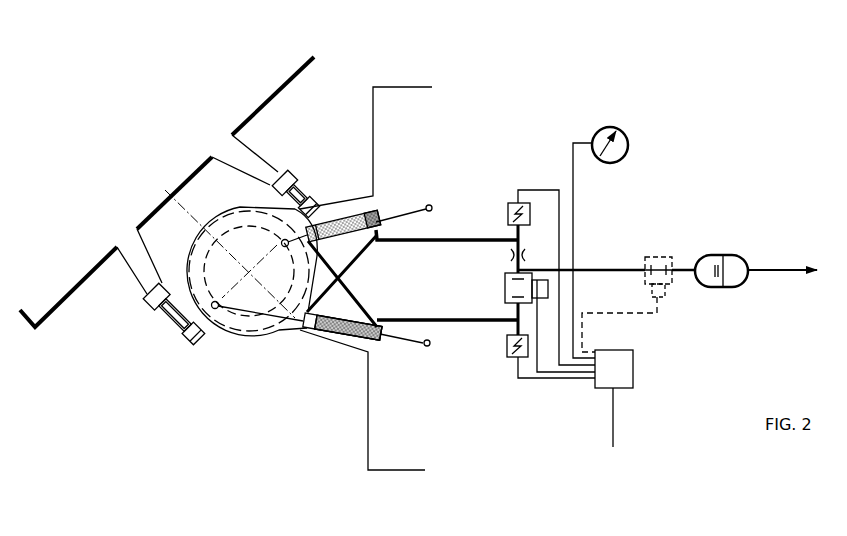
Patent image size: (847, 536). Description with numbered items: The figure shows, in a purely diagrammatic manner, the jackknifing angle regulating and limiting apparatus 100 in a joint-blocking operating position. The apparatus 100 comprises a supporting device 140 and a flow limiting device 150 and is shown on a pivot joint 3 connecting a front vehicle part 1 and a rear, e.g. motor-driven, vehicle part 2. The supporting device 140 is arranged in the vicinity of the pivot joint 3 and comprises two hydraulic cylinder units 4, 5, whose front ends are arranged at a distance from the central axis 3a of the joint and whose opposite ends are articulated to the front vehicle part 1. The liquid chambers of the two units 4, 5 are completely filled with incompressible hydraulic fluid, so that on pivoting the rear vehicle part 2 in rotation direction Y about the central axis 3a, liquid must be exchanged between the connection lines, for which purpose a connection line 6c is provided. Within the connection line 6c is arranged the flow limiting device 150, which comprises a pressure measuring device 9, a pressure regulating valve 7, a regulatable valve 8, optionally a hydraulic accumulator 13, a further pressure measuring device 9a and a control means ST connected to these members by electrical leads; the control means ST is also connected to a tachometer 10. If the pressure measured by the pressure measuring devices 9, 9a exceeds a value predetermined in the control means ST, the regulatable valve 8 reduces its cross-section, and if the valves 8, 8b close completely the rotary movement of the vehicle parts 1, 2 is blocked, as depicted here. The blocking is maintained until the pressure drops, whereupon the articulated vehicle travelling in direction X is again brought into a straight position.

The front vehicle part 1 is at (412, 97).
The rear vehicle part 2 is at (287, 27).
The pivot joint 3 is at (245, 243).
The central axis of the joint 3a is at (248, 272).
The hydraulic cylinder unit 4 is at (342, 222).
The hydraulic cylinder unit 5 is at (325, 339).
The connection line 6c is at (467, 240).
The pressure regulating valve 7 is at (527, 252).
The regulatable valve 8 is at (551, 291).
The valve 8b is at (667, 300).
The pressure measuring device 9 is at (516, 203).
The further pressure measuring device 9a is at (508, 359).
The tachometer 10 is at (630, 152).
The hydraulic accumulator 13 is at (737, 256).
The jackknifing angle regulating and limiting apparatus 100 is at (668, 117).
The supporting device 140 is at (228, 432).
The flow limiting device 150 is at (683, 434).
The control means ST is at (636, 369).
The travel direction X is at (770, 270).
The rotation direction Y is at (162, 108).